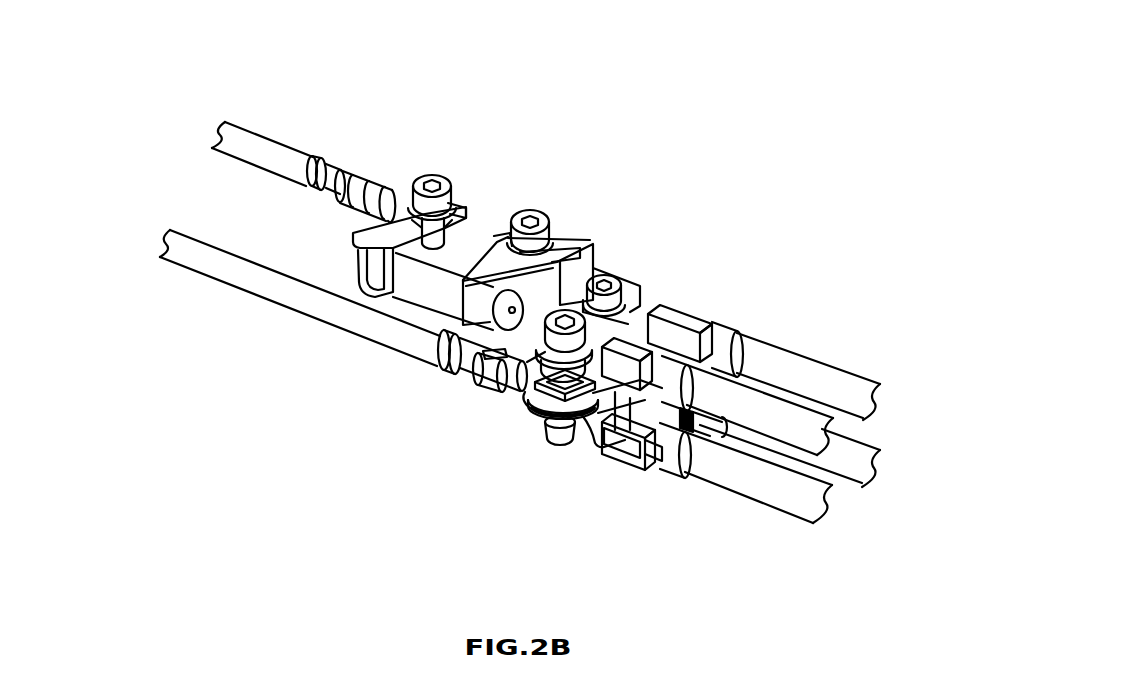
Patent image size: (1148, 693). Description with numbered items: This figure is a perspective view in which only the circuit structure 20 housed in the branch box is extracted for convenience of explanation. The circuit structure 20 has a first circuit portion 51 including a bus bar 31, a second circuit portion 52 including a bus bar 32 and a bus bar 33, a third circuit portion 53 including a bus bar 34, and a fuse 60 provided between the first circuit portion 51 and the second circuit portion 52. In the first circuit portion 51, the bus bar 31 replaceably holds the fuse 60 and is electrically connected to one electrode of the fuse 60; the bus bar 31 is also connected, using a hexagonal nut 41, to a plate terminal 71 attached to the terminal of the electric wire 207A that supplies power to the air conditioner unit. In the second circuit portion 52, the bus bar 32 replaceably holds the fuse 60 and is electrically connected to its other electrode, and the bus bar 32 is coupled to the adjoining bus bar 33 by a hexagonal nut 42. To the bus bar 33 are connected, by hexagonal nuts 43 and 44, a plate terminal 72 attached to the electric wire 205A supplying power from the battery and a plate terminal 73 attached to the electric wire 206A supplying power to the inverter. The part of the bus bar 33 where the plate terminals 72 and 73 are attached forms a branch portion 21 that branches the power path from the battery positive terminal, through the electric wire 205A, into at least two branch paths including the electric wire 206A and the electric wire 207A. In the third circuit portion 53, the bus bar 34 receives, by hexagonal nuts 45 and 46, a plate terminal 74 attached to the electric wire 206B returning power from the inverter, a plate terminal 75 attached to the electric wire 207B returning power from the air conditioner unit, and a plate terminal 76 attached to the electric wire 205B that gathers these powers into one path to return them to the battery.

The circuit structure 20 is at (522, 205).
The branch portion 21 is at (672, 301).
The bus bar 31 is at (352, 240).
The bus bar 32 is at (483, 277).
The bus bar 33 is at (580, 250).
The bus bar 34 is at (590, 447).
The hexagonal nut 41 is at (418, 175).
The hexagonal nut 42 is at (536, 210).
The hexagonal nut 43 is at (535, 380).
The hexagonal nut 44 is at (610, 278).
The hexagonal nut 45 is at (553, 440).
The hexagonal nut 46 is at (630, 455).
The first circuit portion 51 is at (440, 165).
The second circuit portion 52 is at (586, 230).
The third circuit portion 53 is at (540, 440).
The fuse 60 is at (440, 273).
The plate terminal 71 is at (396, 186).
The plate terminal 72 is at (492, 346).
The plate terminal 73 is at (668, 297).
The plate terminal 74 is at (643, 452).
The plate terminal 75 is at (528, 398).
The plate terminal 76 is at (600, 463).
The electric wire 205A is at (755, 417).
The electric wire 205B is at (797, 503).
The electric wire 206A is at (760, 347).
The electric wire 206B is at (843, 450).
The electric wire 207A is at (222, 135).
The electric wire 207B is at (172, 244).